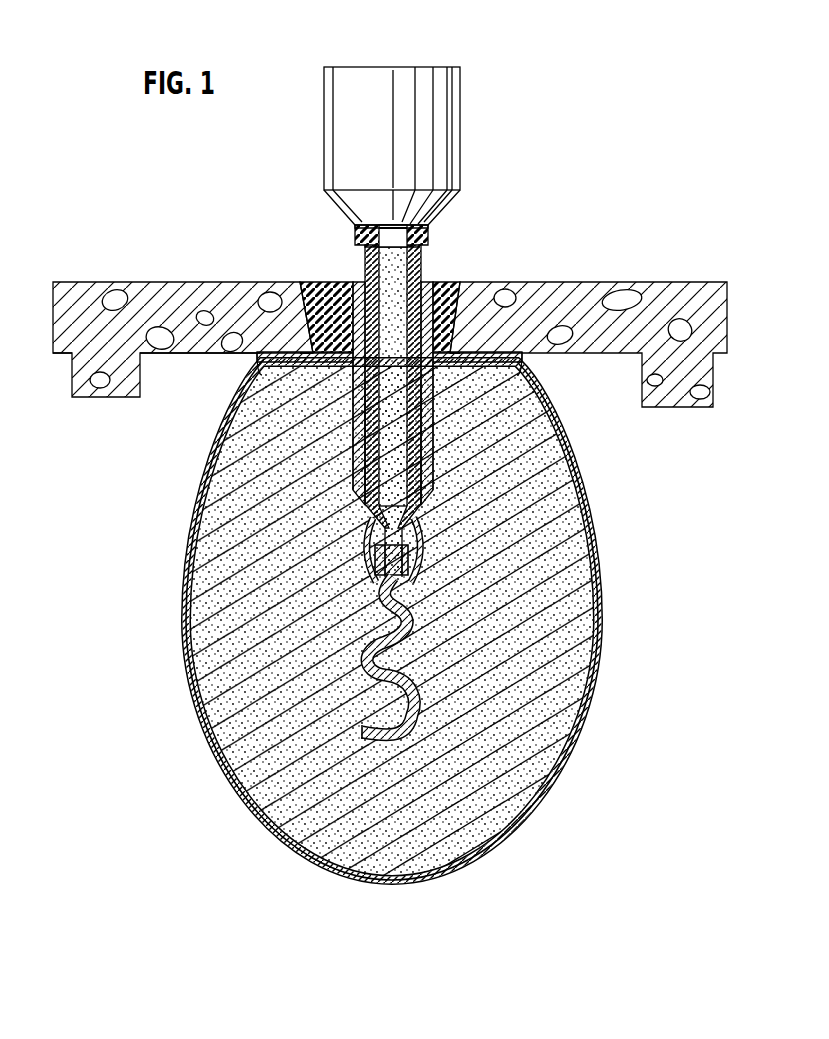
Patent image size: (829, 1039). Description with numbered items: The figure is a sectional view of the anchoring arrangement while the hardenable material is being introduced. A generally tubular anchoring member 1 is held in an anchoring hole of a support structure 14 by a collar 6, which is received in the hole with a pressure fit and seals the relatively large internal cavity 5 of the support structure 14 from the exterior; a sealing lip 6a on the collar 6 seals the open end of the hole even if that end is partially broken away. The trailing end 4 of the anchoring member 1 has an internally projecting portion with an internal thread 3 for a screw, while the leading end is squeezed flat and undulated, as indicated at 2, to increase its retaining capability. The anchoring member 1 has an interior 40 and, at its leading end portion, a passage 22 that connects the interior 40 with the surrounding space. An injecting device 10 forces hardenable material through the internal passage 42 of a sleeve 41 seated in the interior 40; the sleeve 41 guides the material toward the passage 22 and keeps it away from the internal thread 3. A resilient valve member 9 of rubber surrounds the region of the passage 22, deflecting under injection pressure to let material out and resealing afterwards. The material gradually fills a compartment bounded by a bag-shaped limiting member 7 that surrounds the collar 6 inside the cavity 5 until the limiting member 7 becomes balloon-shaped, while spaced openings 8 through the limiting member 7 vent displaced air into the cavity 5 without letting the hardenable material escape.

The anchoring member 1 is at (430, 436).
The undulated leading end 2 is at (418, 712).
The internal thread 3 is at (443, 288).
The trailing end 4 is at (346, 297).
The internal cavity 5 is at (158, 366).
The collar 6 is at (470, 332).
The sealing lip 6a is at (478, 293).
The limiting member 7 is at (190, 692).
The openings 8 is at (204, 719).
The valve member 9 is at (425, 552).
The injecting device 10 is at (358, 106).
The support structure 14 is at (639, 281).
The passage 22 is at (372, 562).
The interior 40 is at (358, 452).
The sleeve 41 is at (362, 405).
The internal passage 42 is at (420, 258).